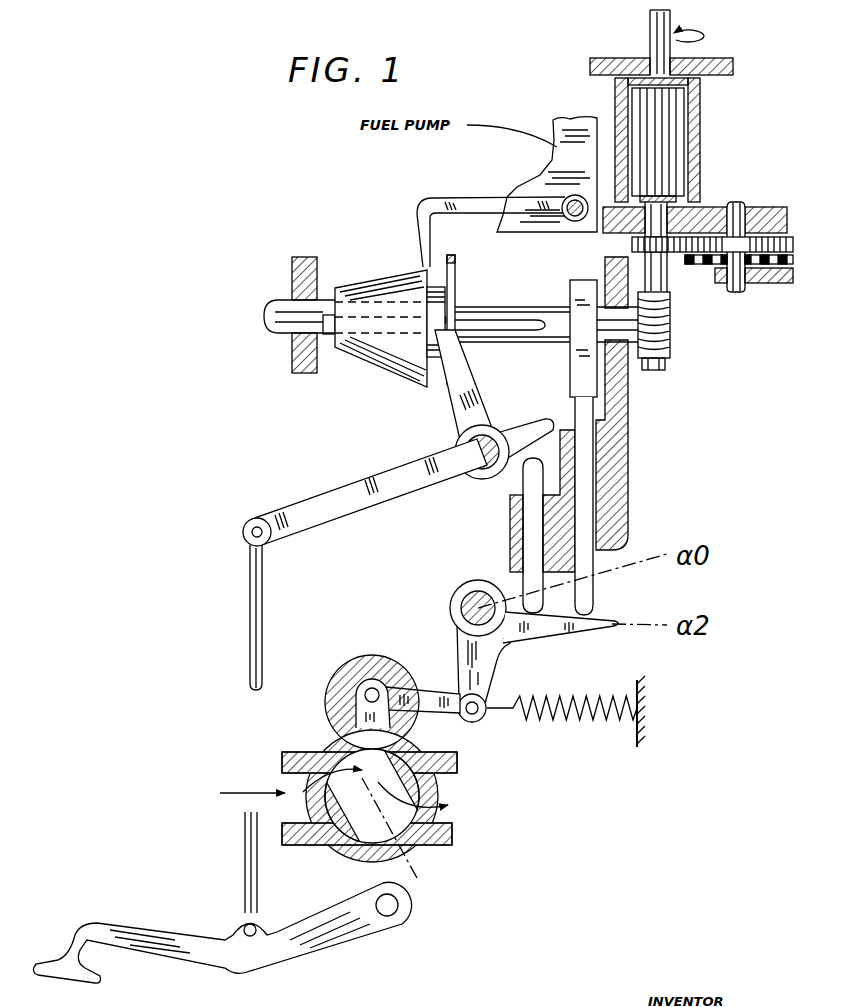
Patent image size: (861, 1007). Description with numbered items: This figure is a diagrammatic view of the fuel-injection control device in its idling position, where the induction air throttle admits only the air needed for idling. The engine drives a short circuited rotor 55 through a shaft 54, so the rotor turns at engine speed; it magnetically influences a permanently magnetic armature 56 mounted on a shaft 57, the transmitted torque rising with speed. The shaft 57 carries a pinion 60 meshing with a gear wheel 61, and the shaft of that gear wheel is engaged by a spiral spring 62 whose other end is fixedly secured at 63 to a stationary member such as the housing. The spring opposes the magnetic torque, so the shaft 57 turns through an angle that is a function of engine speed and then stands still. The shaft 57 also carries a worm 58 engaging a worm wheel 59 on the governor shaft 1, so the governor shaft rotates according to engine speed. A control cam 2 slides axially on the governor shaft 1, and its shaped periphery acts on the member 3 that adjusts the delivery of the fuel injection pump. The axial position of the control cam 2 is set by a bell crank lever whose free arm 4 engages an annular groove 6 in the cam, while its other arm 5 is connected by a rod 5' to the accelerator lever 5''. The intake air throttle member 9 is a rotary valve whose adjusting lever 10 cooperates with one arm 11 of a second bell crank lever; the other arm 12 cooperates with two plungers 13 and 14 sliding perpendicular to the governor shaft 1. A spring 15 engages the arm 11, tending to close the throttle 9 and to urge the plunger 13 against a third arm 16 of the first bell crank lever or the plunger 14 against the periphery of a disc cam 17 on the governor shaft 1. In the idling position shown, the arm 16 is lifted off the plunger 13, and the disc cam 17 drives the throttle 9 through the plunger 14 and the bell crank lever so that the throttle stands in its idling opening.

The governor shaft 1 is at (527, 334).
The control cam 2 is at (410, 352).
The injection pump control member 3 is at (463, 203).
The free arm of bell crank lever 4 is at (458, 404).
The bell crank lever arm 5 is at (365, 492).
The rod 5' is at (275, 729).
The accelerator lever 5'' is at (222, 932).
The annular groove 6 is at (443, 298).
The intake air throttle member 9 is at (340, 853).
The valve adjusting lever 10 is at (392, 718).
The bell crank lever arm 11 is at (462, 648).
The bell crank lever arm 12 is at (590, 632).
The plunger 13 is at (530, 512).
The plunger 14 is at (586, 606).
The spring 15 is at (565, 718).
The third arm 16 is at (518, 432).
The disc cam 17 is at (584, 285).
The shaft 54 is at (675, 28).
The short circuited rotor 55 is at (698, 119).
The permanently magnetic armature 56 is at (680, 161).
The shaft 57 is at (650, 226).
The worm 58 is at (652, 371).
The worm wheel 59 is at (672, 340).
The pinion 60 is at (664, 250).
The gear wheel 61 is at (778, 237).
The spiral spring 62 is at (707, 266).
The fixed anchorage 63 is at (786, 288).